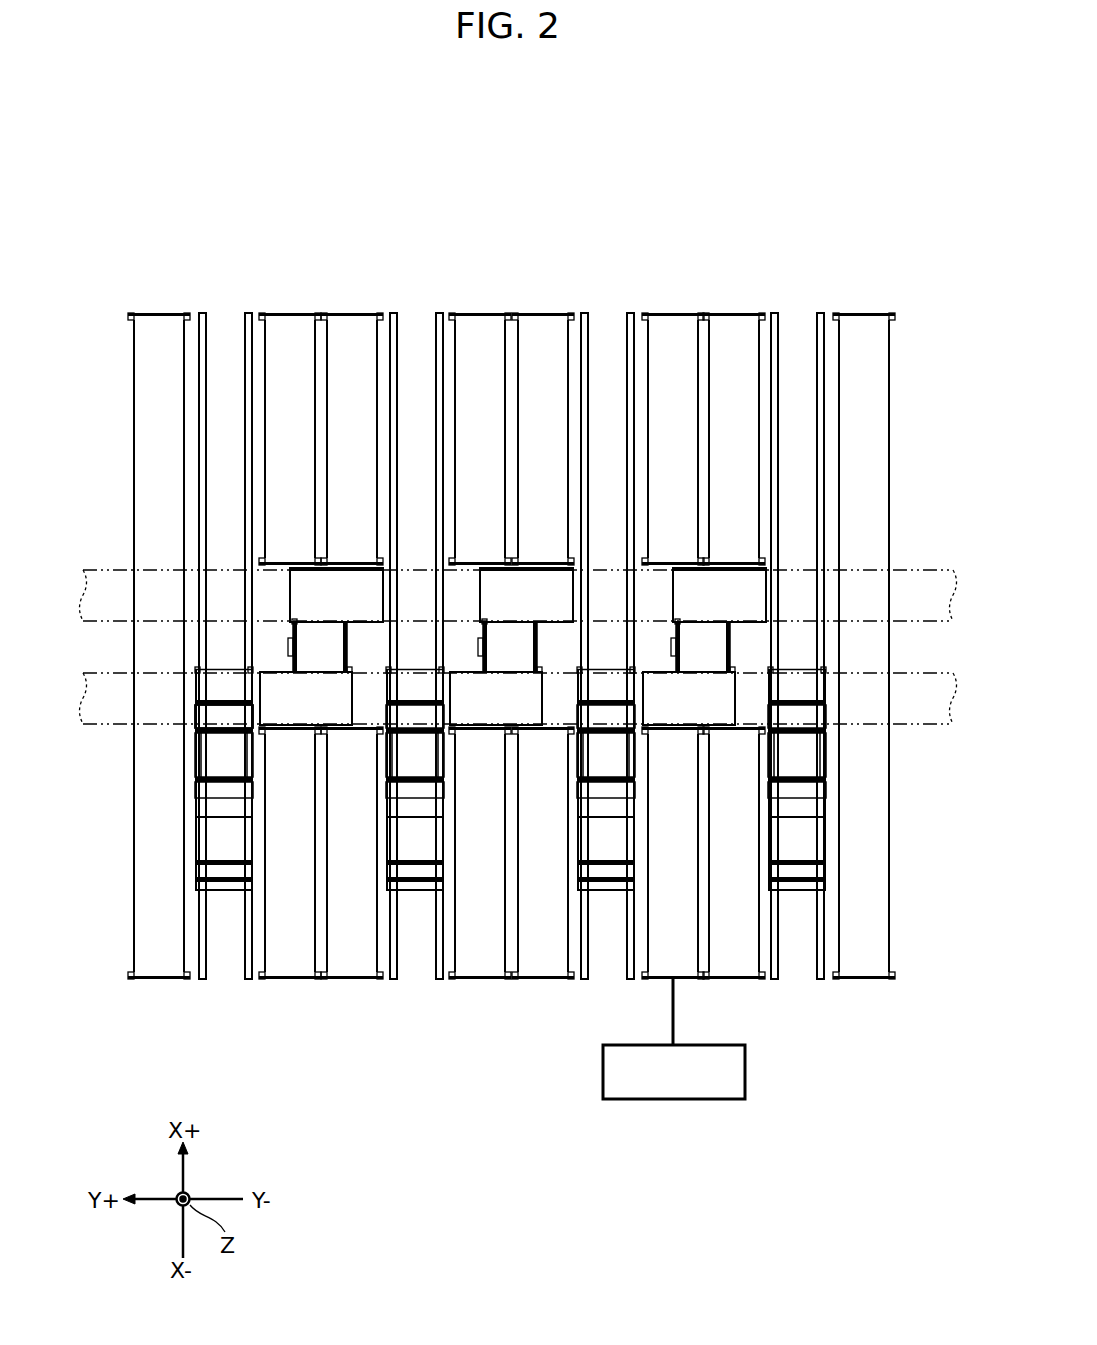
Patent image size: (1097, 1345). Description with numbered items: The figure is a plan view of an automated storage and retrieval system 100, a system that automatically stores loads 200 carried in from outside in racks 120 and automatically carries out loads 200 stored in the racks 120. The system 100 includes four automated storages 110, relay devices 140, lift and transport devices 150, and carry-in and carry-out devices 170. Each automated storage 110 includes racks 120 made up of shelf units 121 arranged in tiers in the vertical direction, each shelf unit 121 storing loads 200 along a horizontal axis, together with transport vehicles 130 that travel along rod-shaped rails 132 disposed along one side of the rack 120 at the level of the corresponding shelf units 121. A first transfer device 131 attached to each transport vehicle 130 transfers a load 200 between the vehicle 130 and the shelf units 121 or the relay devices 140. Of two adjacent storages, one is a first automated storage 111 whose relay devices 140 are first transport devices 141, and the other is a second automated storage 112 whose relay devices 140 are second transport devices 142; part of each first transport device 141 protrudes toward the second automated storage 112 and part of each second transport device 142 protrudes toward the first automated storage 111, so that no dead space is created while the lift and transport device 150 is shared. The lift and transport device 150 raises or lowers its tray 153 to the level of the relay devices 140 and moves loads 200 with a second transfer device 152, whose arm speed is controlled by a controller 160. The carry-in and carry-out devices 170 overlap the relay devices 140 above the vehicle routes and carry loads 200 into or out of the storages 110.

The automated storage and retrieval system 100 is at (657, 163).
The automated storage 110 is at (896, 261).
The first automated storage 111 is at (320, 306).
The second automated storage 112 is at (510, 306).
The rack 120 is at (142, 342).
The shelf unit 121 is at (142, 412).
The transport vehicle 130 is at (220, 788).
The first transfer device 131 is at (217, 735).
The rail 132 is at (199, 981).
The relay device 140 is at (382, 1033).
The first transport device 141 is at (290, 698).
The second transport device 142 is at (358, 598).
The lift and transport device 150 is at (313, 653).
The second transfer device 152 is at (292, 660).
The tray 153 is at (290, 638).
The controller 160 is at (747, 1075).
The carry-in and carry-out device 170 is at (912, 726).
The load 200 is at (220, 753).